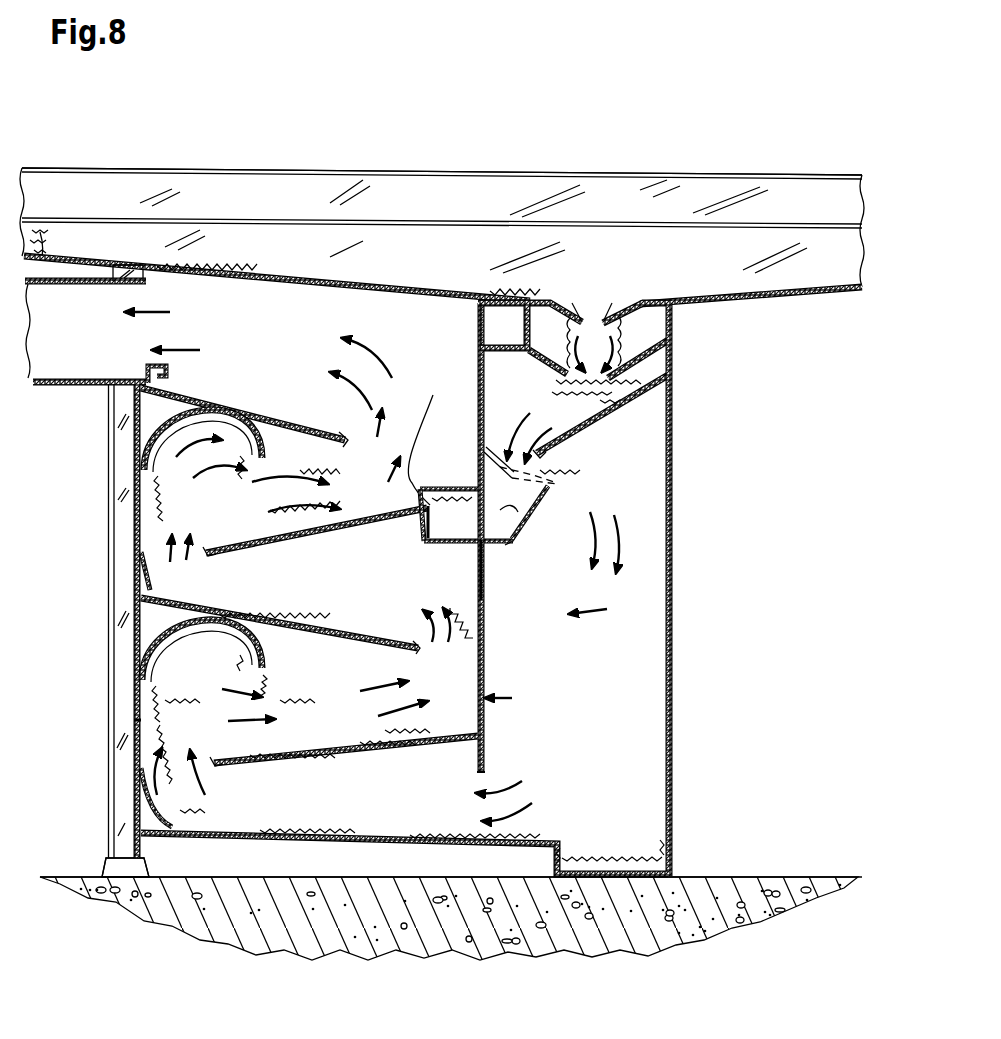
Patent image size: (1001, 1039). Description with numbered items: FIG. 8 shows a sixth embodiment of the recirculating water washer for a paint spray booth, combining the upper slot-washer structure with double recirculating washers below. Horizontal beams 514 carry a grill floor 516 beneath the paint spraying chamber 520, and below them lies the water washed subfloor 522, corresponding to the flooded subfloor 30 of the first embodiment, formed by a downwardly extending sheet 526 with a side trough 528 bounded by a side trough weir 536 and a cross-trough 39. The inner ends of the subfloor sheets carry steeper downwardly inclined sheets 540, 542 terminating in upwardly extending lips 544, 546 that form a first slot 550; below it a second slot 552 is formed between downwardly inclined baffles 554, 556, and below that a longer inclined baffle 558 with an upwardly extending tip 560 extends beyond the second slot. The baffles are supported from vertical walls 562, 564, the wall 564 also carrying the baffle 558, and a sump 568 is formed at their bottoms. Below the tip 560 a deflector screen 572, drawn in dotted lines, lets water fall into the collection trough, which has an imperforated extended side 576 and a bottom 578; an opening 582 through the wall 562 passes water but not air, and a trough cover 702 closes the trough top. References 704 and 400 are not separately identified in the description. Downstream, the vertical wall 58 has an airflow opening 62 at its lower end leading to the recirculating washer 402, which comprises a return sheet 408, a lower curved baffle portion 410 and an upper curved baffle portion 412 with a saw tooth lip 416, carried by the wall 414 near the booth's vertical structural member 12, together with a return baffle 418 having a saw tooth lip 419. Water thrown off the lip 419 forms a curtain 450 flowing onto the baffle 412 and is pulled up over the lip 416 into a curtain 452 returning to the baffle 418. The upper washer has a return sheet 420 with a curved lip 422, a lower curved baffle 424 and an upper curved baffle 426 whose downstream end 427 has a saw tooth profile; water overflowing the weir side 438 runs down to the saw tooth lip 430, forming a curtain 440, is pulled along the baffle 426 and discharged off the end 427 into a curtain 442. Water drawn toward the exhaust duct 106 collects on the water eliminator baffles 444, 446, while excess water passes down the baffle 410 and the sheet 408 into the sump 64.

The vertical structural member 12 is at (120, 515).
The water washed subfloor 30 is at (216, 266).
The cross-trough 39 is at (497, 233).
The vertical wall 58 is at (483, 594).
The airflow opening 62 is at (483, 772).
The bottom sump 64 is at (590, 865).
The exhaust duct 106 is at (65, 386).
The downward air flow 400 is at (609, 568).
The recirculating washer 402 is at (516, 698).
The return sheet 408 is at (368, 840).
The lower curved baffle portion 410 is at (140, 870).
The upper curved baffle portion 412 is at (152, 641).
The wall 414 is at (140, 721).
The downstream lip 416 is at (256, 660).
The return baffle 418 is at (278, 765).
The lip 419 is at (168, 823).
The return sheet 420 is at (157, 595).
The curved lip 422 is at (422, 648).
The lower curved baffle 424 is at (157, 594).
The upper curved baffle 426 is at (148, 433).
The downstream end 427 is at (266, 426).
The saw tooth lip 430 is at (212, 560).
The weir side 438 is at (433, 396).
The curtain of water 440 is at (173, 528).
The water curtain 442 is at (300, 480).
The water eliminator baffle 444 is at (342, 438).
The water eliminator baffle 446 is at (168, 370).
The curtain of water 450 is at (168, 719).
The curtain of water 452 is at (286, 703).
The horizontal beam 514 is at (793, 200).
The grill floor 516 is at (760, 172).
The paint spraying chamber 520 is at (378, 148).
The water washed subfloor 522 is at (805, 299).
The downwardly extending sheet 526 is at (755, 303).
The side trough 528 is at (44, 236).
The side trough weir 536 is at (48, 250).
The downwardly inclined sheet 540 is at (553, 300).
The downwardly inclined sheet 542 is at (632, 300).
The upwardly extending lip 544 is at (572, 300).
The upwardly extending lip 546 is at (612, 300).
The first gap or slot 550 is at (598, 350).
The second slot or gap 552 is at (572, 382).
The downwardly inclined baffle 554 is at (552, 371).
The downwardly inclined baffle 556 is at (668, 355).
The longer downwardly inclined baffle 558 is at (628, 406).
The upwardly extending tip 560 is at (543, 457).
The vertical wall 562 is at (483, 453).
The vertical wall 564 is at (671, 580).
The sump 568 is at (607, 868).
The deflector screen 572 is at (557, 484).
The imperforated extended side 576 is at (522, 512).
The bottom 578 is at (490, 541).
The opening 582 is at (451, 541).
The trough cover 702 is at (438, 487).
The pan corner 704 is at (518, 538).